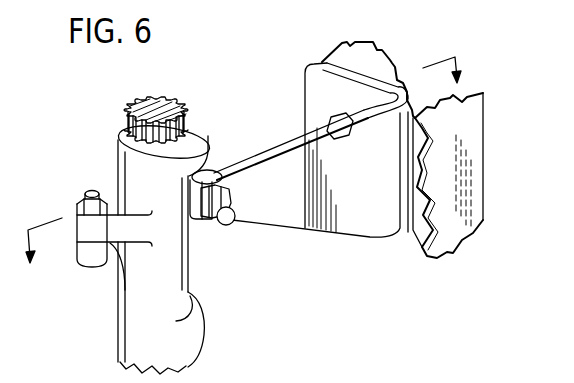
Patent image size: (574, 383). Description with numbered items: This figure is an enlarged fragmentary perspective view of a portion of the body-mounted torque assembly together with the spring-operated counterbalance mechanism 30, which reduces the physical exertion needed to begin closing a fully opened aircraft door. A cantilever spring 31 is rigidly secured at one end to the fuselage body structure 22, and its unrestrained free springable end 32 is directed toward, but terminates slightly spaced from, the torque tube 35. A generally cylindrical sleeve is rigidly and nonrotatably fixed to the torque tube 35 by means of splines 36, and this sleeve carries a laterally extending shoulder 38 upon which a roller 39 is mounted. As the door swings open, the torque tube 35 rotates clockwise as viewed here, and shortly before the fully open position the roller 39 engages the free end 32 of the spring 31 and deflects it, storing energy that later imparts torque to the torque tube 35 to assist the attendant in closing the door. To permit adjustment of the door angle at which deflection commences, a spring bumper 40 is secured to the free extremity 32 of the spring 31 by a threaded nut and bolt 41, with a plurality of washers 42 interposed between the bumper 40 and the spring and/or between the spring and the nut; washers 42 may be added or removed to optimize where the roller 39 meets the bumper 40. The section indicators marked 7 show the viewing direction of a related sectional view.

The section line 7- 7 is at (250, 170).
The fuselage body structure 22 is at (380, 67).
The counterbalance mechanism 30 is at (311, 159).
The cantilever spring 31 is at (368, 213).
The free springable end 32 is at (239, 180).
The torque tube 35 is at (137, 97).
The splines 36 is at (127, 132).
The shoulder 38 is at (114, 296).
The roller 39 is at (87, 265).
The spring bumper 40 is at (213, 172).
The threaded nut and bolt 41 is at (218, 233).
The washers 42 is at (218, 177).